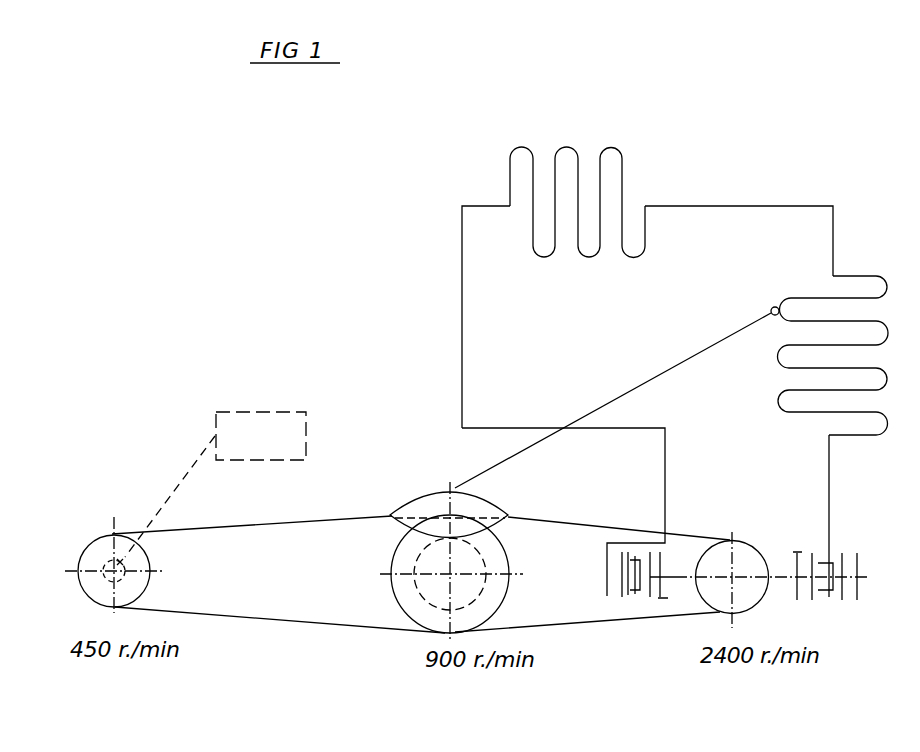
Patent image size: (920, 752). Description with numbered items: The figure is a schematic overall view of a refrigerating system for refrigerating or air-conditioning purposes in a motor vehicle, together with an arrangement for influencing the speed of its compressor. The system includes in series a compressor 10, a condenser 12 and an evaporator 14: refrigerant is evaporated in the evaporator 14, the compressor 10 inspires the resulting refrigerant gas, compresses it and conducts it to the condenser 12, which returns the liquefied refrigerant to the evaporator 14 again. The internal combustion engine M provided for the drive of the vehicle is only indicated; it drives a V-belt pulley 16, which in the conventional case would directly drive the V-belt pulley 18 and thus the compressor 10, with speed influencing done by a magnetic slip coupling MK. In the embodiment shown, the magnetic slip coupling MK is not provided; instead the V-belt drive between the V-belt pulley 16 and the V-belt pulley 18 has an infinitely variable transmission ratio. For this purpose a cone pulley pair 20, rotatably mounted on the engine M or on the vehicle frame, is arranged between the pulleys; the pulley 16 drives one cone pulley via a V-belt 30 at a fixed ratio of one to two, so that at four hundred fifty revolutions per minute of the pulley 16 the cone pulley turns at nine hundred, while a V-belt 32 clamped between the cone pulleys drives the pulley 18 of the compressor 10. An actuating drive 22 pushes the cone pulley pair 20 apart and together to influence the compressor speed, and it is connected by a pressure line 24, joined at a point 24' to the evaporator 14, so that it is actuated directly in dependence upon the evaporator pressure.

The compressor 10 is at (790, 623).
The condenser 12 is at (567, 145).
The evaporator 14 is at (878, 438).
The V-belt pulley 16 is at (137, 582).
The V-belt pulley 18 is at (702, 586).
The cone pulley pair 20 is at (493, 598).
The actuating drive 22 is at (427, 497).
The pressure line 24 is at (613, 400).
The connection point 24' is at (763, 282).
The V-belt 30 is at (278, 620).
The V-belt 32 is at (590, 623).
The internal combustion engine M is at (266, 411).
The magnetic slip coupling MK is at (110, 557).